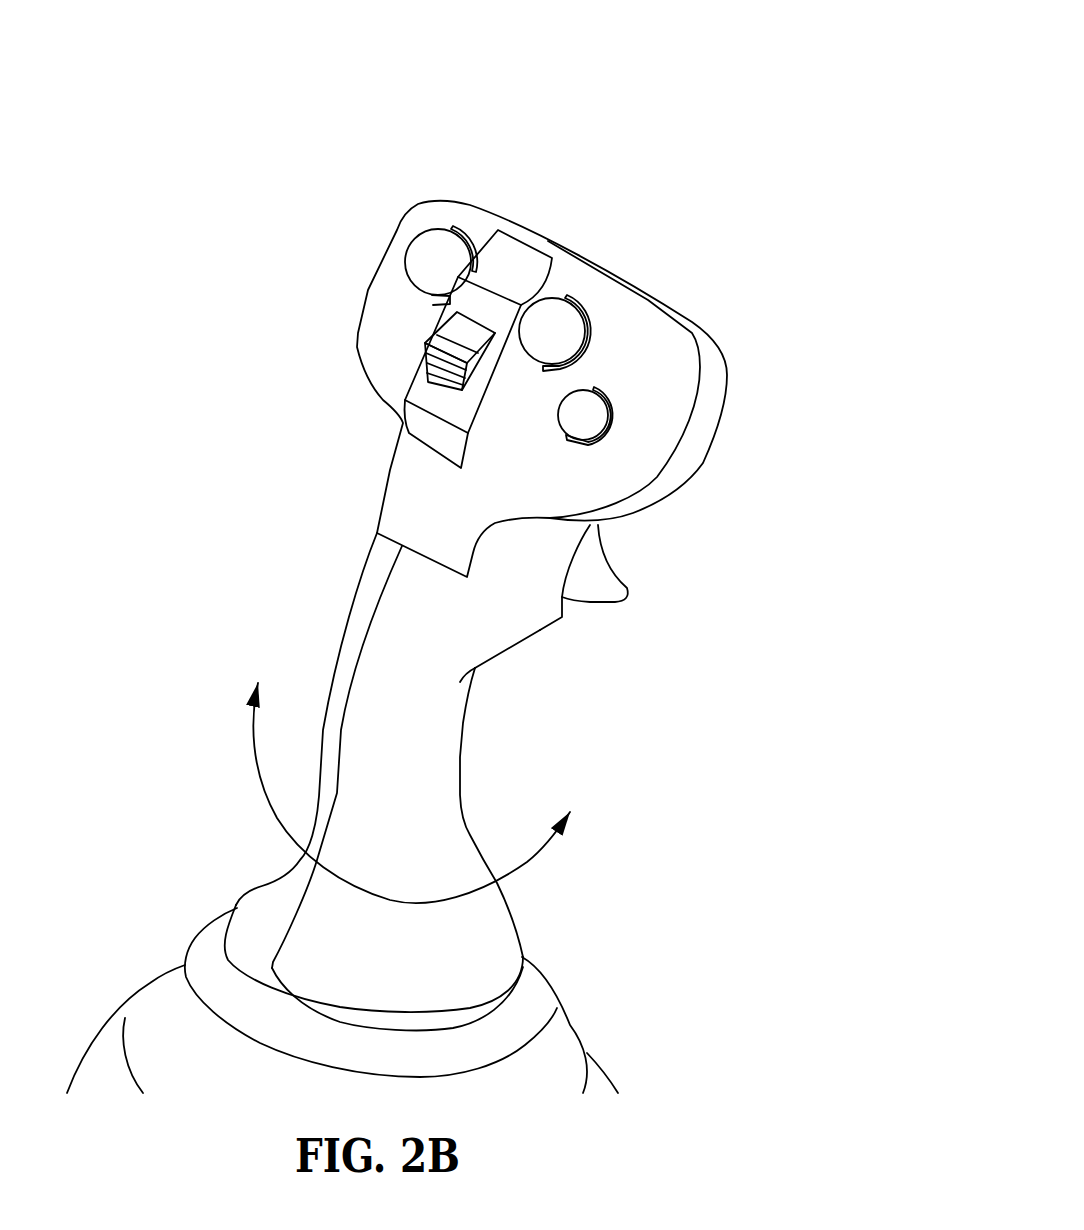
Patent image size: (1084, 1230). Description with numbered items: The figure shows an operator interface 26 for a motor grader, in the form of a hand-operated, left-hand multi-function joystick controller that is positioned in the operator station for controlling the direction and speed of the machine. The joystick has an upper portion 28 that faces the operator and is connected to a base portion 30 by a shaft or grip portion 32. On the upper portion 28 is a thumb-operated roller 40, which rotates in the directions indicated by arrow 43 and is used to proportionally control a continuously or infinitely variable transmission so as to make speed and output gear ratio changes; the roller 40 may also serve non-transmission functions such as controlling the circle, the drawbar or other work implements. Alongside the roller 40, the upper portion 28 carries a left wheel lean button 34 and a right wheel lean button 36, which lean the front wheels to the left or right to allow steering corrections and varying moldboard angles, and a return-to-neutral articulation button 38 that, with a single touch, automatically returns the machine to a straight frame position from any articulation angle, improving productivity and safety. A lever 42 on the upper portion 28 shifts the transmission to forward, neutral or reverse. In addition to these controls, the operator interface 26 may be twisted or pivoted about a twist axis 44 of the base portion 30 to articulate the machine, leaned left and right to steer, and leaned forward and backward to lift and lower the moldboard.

The operator interface 26 is at (623, 90).
The upper portion 28 is at (632, 347).
The base portion 30 is at (557, 1048).
The grip portion 32 is at (427, 743).
The left wheel lean button 34 is at (428, 230).
The right wheel lean button 36 is at (577, 297).
The return-to-neutral articulation button 38 is at (610, 433).
The roller 40 is at (438, 422).
The lever 42 is at (612, 603).
The arrow 43 is at (430, 315).
The twist axis 44 is at (528, 868).